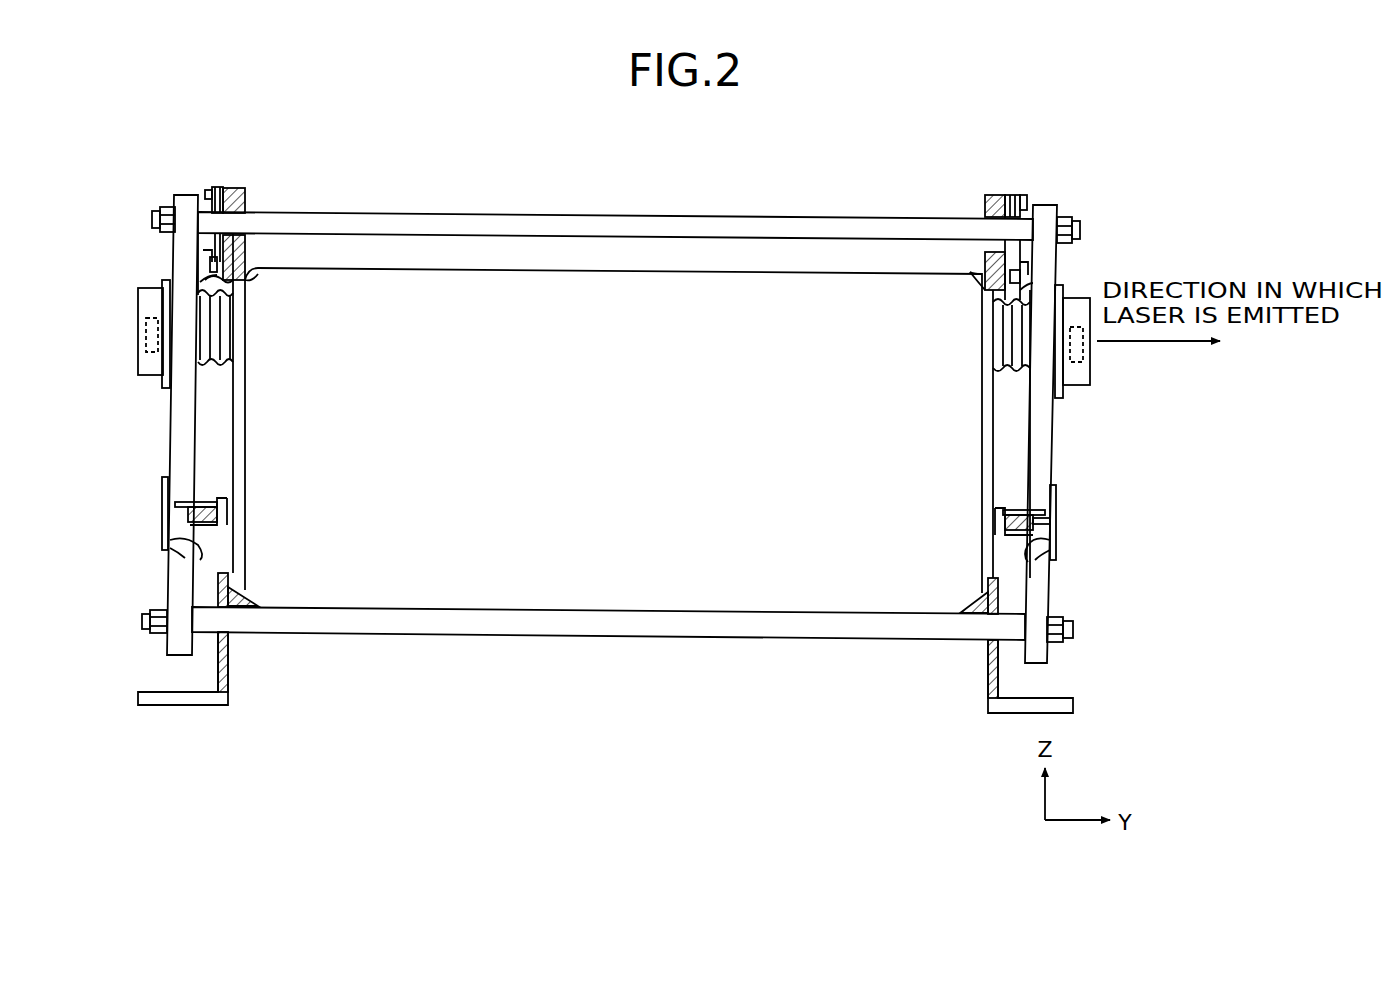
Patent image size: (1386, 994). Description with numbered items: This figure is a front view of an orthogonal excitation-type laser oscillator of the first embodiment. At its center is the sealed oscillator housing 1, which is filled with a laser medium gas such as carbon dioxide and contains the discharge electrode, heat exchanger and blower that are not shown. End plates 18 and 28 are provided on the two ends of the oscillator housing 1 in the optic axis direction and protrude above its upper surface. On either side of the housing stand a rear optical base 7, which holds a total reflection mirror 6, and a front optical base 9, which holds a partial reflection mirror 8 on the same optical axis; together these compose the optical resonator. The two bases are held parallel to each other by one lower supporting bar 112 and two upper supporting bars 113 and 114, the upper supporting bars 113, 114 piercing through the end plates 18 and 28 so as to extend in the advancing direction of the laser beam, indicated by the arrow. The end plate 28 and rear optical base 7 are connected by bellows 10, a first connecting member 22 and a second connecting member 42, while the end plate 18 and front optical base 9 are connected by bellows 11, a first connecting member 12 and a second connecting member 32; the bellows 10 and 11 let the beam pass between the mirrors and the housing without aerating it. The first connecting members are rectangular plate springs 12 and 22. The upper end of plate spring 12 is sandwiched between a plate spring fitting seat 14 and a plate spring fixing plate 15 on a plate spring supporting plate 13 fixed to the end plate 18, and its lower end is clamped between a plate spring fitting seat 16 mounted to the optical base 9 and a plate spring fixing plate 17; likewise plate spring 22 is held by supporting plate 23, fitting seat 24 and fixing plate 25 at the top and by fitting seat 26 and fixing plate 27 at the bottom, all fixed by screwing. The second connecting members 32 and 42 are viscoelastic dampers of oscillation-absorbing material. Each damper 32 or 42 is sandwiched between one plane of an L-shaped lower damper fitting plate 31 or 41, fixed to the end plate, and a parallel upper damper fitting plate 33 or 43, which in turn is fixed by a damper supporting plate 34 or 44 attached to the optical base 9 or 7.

The oscillator housing 1 is at (620, 268).
The total reflection mirror 6 is at (138, 330).
The rear optical base 7 is at (188, 196).
The partial reflection mirror 8 is at (1092, 358).
The front optical base 9 is at (1047, 207).
The bellows 10 is at (198, 375).
The bellows 11 is at (1018, 370).
The first connecting member 12 is at (1023, 195).
The plate spring supporting plate 13 is at (1000, 195).
The plate spring fitting seat 14 is at (1014, 195).
The plate spring fixing plate 15 is at (1030, 192).
The plate spring fitting seat 16 is at (1027, 263).
The plate spring fixing plate 17 is at (1023, 287).
The end plate 18 is at (985, 198).
The first connecting member 22 is at (217, 187).
The plate spring supporting plate 23 is at (245, 192).
The plate spring fitting seat 24 is at (232, 188).
The plate spring fixing plate 25 is at (208, 190).
The plate spring fitting seat 26 is at (198, 255).
The plate spring fixing plate 27 is at (200, 280).
The end plate 28 is at (248, 203).
The L-shaped lower damper fitting plate 31 is at (1030, 570).
The second connecting member 32 is at (1055, 528).
The upper damper fitting plate 33 is at (1050, 495).
The damper supporting plate 34 is at (1058, 542).
The L-shaped lower damper fitting plate 41 is at (195, 558).
The second connecting member 42 is at (188, 515).
The upper damper fitting plate 43 is at (175, 502).
The damper supporting plate 44 is at (165, 480).
The lower supporting bar 112 is at (775, 640).
The upper supporting bar 113 is at (797, 216).
The upper supporting bar 114 is at (615, 226).